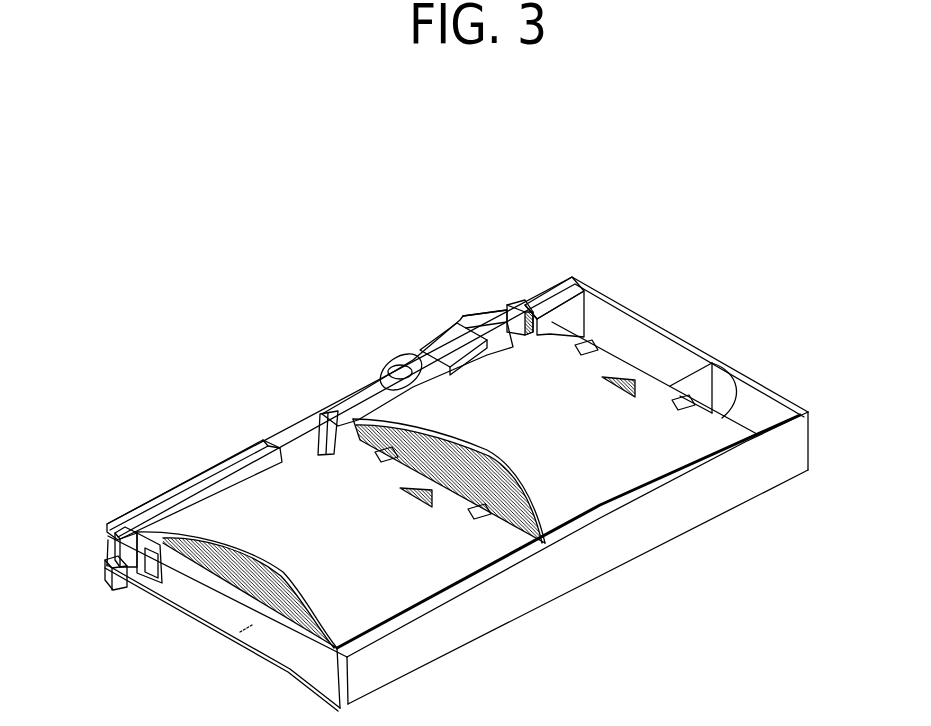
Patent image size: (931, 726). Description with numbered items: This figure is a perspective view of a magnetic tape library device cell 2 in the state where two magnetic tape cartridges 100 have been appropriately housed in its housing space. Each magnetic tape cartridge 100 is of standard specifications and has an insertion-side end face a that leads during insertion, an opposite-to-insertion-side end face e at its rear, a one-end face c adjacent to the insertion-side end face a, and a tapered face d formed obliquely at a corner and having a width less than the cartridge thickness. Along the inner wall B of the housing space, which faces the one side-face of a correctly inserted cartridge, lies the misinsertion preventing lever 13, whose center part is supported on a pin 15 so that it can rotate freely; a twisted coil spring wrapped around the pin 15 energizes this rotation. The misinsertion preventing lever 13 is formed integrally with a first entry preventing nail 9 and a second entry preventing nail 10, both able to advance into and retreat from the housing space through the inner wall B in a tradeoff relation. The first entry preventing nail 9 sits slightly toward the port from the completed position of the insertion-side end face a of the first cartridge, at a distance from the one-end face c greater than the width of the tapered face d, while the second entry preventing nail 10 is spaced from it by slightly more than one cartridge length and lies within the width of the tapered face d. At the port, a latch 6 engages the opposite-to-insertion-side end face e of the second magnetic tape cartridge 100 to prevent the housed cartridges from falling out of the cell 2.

The magnetic tape library device cell 2 is at (781, 374).
The latch 6 is at (115, 550).
The first entry preventing nail 9 is at (512, 306).
The second entry preventing nail 10 is at (318, 414).
The misinsertion preventing lever 13 is at (431, 325).
The pin 15 is at (390, 360).
The inner wall B is at (237, 462).
The insertion-side end face a is at (733, 366).
The one-end face c is at (447, 553).
The tapered face d is at (338, 415).
The opposite-to-insertion-side end face e is at (236, 641).
The magnetic tape cartridge 100 is at (388, 580).